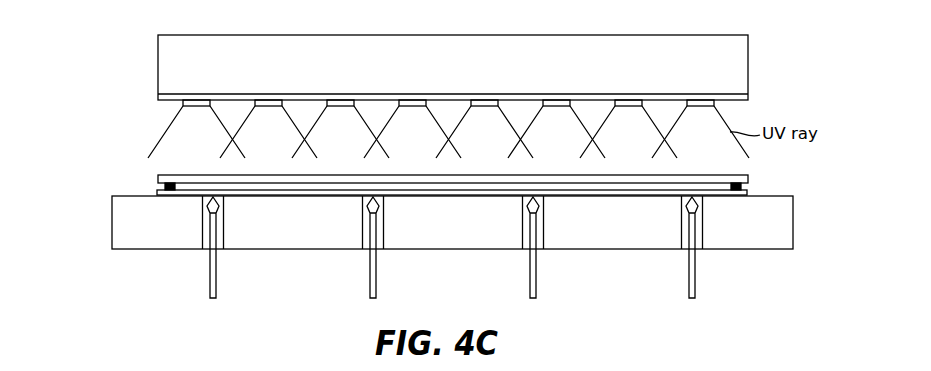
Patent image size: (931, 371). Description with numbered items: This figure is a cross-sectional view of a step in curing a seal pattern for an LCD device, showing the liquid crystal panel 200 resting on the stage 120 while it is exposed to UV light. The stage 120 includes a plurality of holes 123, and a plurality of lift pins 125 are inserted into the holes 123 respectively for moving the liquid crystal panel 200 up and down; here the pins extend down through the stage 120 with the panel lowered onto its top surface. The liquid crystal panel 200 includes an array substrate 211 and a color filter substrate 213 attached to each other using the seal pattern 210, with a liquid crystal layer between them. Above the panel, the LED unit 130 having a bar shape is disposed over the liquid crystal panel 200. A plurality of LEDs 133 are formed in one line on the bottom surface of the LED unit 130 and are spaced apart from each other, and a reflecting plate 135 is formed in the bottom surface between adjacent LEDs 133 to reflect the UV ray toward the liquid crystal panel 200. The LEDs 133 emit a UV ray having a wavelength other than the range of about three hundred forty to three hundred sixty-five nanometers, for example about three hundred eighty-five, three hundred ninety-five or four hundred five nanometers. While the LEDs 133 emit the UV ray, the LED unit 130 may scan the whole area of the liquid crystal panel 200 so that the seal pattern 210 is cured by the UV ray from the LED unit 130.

The LED unit 130 is at (740, 67).
The reflecting plate 135 is at (158, 97).
The LEDs 133 is at (183, 104).
The liquid crystal panel 200 is at (394, 168).
The color filter substrate 213 is at (158, 178).
The seal pattern 210 is at (174, 186).
The array substrate 211 is at (158, 193).
The stage 120 is at (785, 225).
The holes 123 is at (700, 243).
The lift pins 125 is at (537, 270).